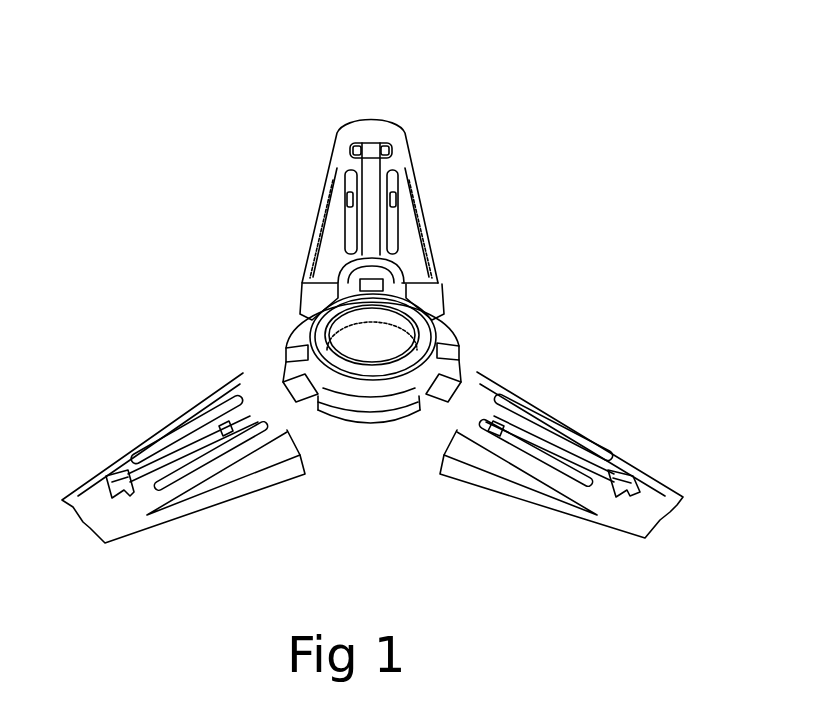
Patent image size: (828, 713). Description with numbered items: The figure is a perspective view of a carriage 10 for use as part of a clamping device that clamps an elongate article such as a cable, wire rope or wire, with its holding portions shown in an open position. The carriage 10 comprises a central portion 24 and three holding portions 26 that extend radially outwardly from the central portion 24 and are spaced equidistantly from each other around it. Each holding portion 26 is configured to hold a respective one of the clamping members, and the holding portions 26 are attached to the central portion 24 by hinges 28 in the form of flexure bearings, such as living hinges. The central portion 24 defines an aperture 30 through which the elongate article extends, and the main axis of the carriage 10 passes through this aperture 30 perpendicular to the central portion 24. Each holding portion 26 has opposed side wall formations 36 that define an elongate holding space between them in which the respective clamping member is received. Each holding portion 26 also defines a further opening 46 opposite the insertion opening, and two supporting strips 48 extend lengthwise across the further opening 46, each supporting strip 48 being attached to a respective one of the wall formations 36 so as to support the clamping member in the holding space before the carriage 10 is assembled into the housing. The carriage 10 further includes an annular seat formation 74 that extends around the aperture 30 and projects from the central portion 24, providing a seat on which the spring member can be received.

The carriage 10 is at (372, 306).
The central portion 24 is at (324, 356).
The holding portion 26 is at (372, 358).
The hinge 28 is at (385, 376).
The aperture 30 is at (433, 304).
The side wall formation 36 is at (371, 362).
The further opening 46 is at (372, 293).
The supporting strip 48 is at (364, 372).
The annular seat formation 74 is at (318, 315).